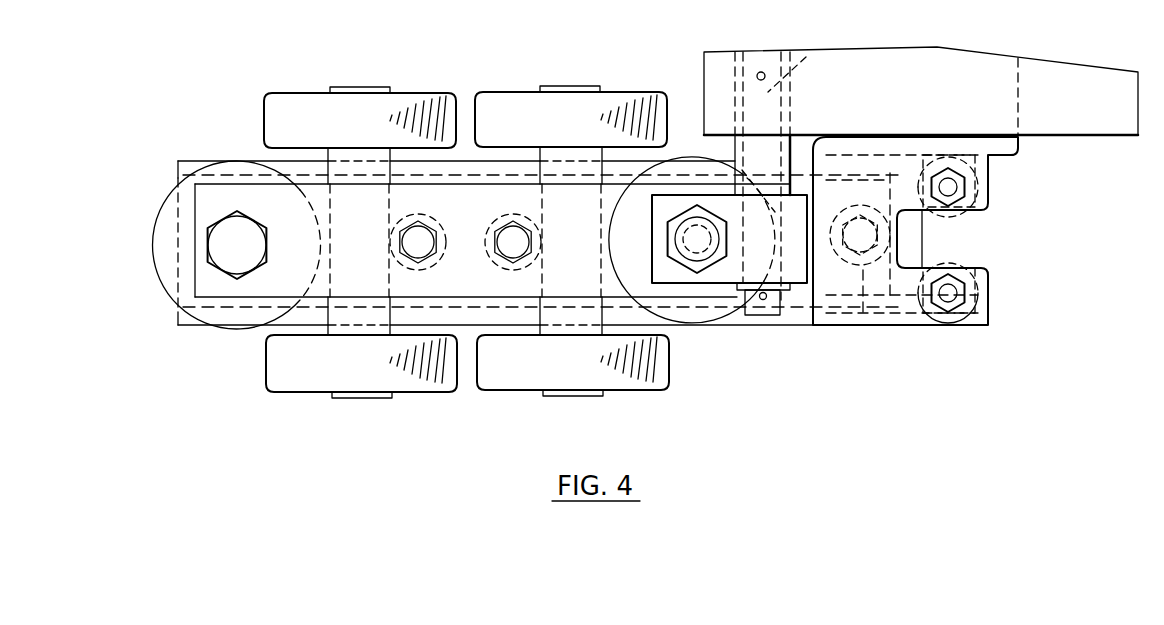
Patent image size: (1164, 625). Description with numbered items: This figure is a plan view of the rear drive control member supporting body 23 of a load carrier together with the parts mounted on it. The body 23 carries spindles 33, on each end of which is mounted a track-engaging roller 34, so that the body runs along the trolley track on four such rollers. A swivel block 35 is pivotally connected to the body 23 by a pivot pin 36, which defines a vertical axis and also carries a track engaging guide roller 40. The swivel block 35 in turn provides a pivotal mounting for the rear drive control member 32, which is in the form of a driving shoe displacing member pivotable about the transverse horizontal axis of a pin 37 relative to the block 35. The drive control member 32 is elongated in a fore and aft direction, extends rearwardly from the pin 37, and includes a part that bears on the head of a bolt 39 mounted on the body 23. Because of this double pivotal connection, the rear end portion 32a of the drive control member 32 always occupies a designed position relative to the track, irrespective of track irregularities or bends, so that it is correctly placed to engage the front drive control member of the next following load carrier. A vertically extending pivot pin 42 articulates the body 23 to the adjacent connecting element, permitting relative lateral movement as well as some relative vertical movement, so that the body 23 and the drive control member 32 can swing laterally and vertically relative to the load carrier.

The rear drive control member supporting body 23 is at (728, 368).
The rear drive control member 32 is at (917, 46).
The rear end portion of the rear drive control member 32a is at (1070, 64).
The spindle 33 is at (315, 300).
The track-engaging roller 34 is at (420, 102).
The swivel block 35 is at (799, 268).
The pivot pin 36 is at (686, 238).
The pin 37 is at (812, 53).
The bolt 39 is at (862, 322).
The track engaging guide roller 40 is at (710, 313).
The pivot pin 42 is at (228, 245).